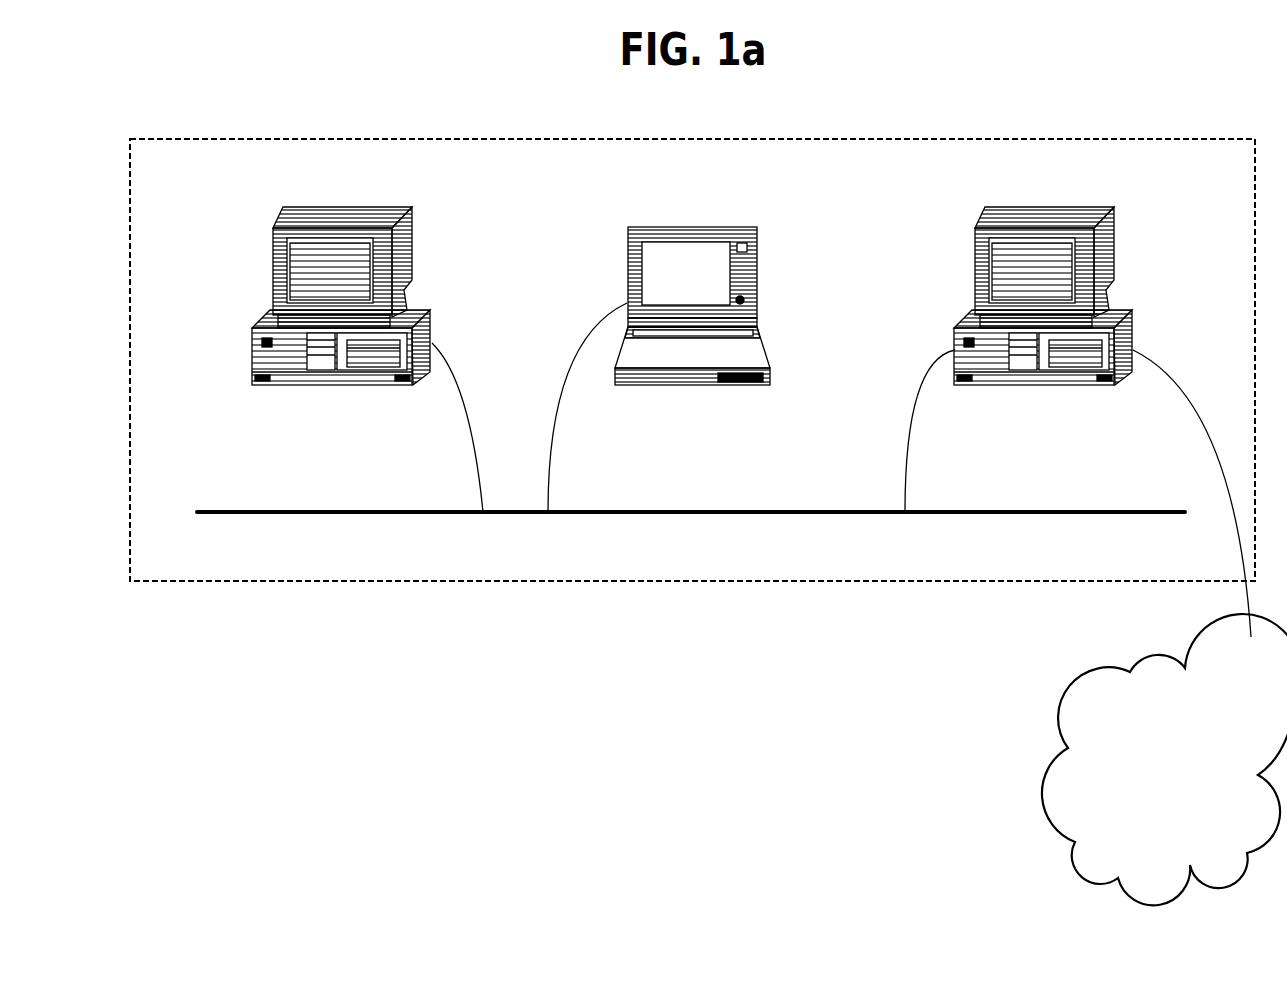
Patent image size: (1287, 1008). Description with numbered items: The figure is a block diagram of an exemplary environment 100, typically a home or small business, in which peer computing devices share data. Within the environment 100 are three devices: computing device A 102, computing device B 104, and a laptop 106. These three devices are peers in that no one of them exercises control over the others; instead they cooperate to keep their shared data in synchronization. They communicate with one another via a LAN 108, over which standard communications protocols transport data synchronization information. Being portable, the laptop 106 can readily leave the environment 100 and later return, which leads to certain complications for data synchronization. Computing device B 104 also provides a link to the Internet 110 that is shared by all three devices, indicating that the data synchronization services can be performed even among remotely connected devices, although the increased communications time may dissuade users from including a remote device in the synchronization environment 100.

The environment 100 is at (903, 139).
The computing device A 102 is at (341, 346).
The computing device B 104 is at (1043, 346).
The laptop 106 is at (692, 340).
The LAN 108 is at (675, 515).
The Internet 110 is at (1190, 787).